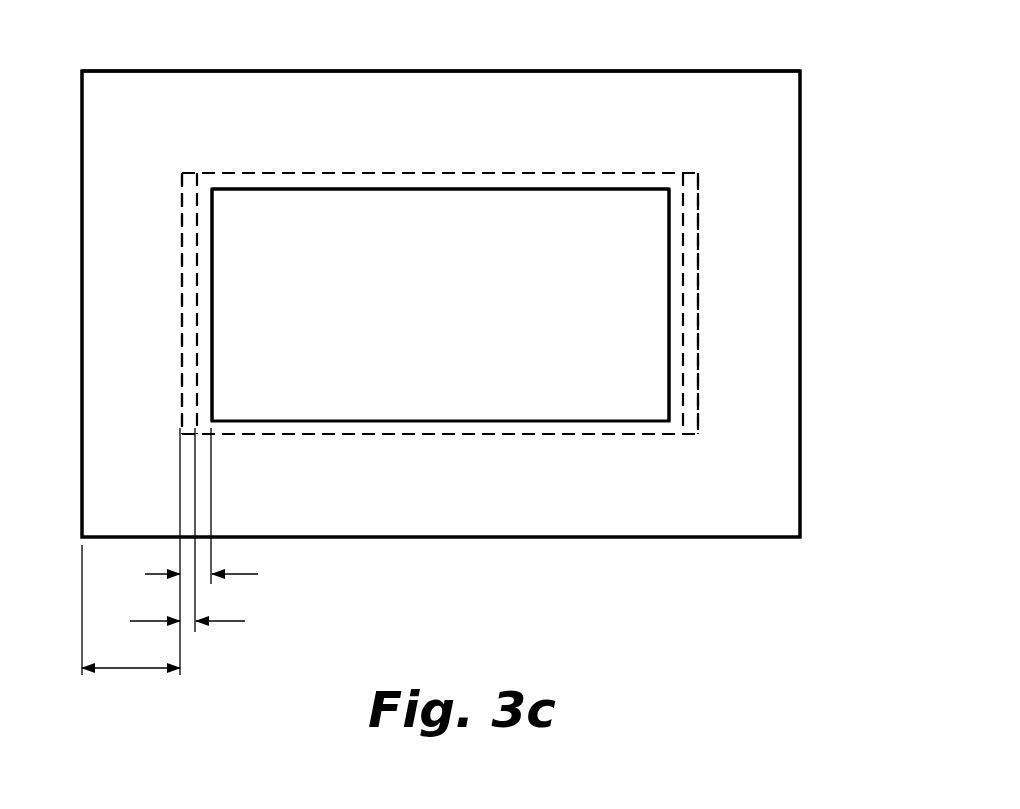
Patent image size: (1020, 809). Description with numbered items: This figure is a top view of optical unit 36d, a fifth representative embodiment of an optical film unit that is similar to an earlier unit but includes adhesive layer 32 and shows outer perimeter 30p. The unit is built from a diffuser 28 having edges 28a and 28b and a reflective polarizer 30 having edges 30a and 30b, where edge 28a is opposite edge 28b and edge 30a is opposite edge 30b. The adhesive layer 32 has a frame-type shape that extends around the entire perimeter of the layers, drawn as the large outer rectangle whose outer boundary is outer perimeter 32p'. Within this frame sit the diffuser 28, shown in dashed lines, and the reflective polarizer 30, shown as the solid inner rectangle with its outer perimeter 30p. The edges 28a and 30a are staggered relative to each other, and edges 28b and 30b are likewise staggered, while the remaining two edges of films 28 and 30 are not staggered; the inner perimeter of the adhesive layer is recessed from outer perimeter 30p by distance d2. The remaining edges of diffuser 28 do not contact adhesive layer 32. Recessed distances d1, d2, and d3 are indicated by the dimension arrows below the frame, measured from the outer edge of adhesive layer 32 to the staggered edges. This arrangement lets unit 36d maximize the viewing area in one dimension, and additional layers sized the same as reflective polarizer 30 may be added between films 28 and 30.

The optical unit 36d is at (788, 53).
The adhesive layer 32 is at (88, 172).
The outer perimeter of adhesive layer 32p' is at (441, 41).
The diffuser 28 is at (690, 212).
The edge of diffuser 28a is at (183, 300).
The edge of diffuser 28b is at (700, 262).
The reflective polarizer 30 is at (675, 323).
The edge of reflective polarizer 30a is at (197, 350).
The edge of reflective polarizer 30b is at (685, 362).
The outer perimeter 30p is at (524, 173).
The recessed distance d1 is at (230, 622).
The recessed distance d2 is at (250, 575).
The recessed distance d3 is at (130, 669).